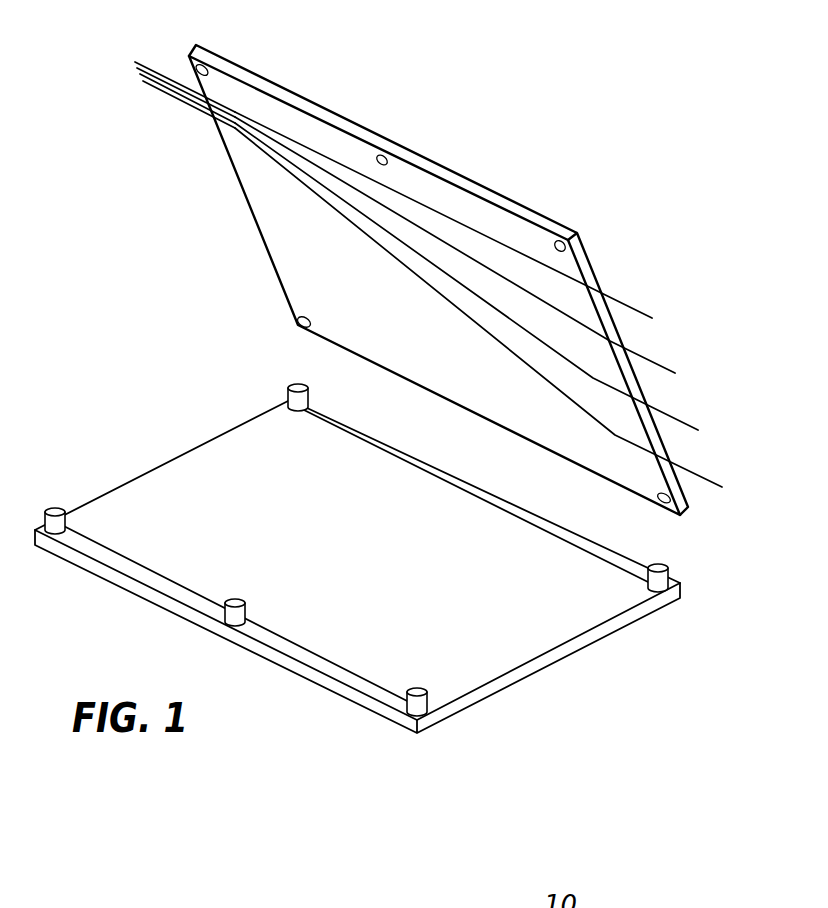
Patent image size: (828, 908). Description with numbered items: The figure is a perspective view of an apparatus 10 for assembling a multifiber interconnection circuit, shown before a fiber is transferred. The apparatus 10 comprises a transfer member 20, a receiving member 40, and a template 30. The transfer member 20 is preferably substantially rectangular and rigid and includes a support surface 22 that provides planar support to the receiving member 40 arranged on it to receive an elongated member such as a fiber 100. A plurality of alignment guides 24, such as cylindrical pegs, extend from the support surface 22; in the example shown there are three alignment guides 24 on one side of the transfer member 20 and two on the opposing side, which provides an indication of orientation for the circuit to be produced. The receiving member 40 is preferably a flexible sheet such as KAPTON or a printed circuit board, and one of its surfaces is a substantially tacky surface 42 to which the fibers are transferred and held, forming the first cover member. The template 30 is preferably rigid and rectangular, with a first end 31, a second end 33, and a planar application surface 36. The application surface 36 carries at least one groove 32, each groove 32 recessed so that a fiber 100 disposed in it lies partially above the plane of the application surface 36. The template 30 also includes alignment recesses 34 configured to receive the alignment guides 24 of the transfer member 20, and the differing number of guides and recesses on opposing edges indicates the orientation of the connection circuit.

The apparatus 10 is at (732, 374).
The transfer member 20 is at (441, 757).
The support surface 22 is at (120, 562).
The alignment guide 24 is at (237, 623).
The template 30 is at (198, 227).
The first end 31 is at (193, 72).
The groove 32 is at (232, 125).
The second end 33 is at (686, 499).
The alignment recess 34 is at (558, 243).
The application surface 36 is at (315, 130).
The receiving member 40 is at (182, 455).
The tacky surface 42 is at (527, 645).
The fiber 100 is at (630, 303).